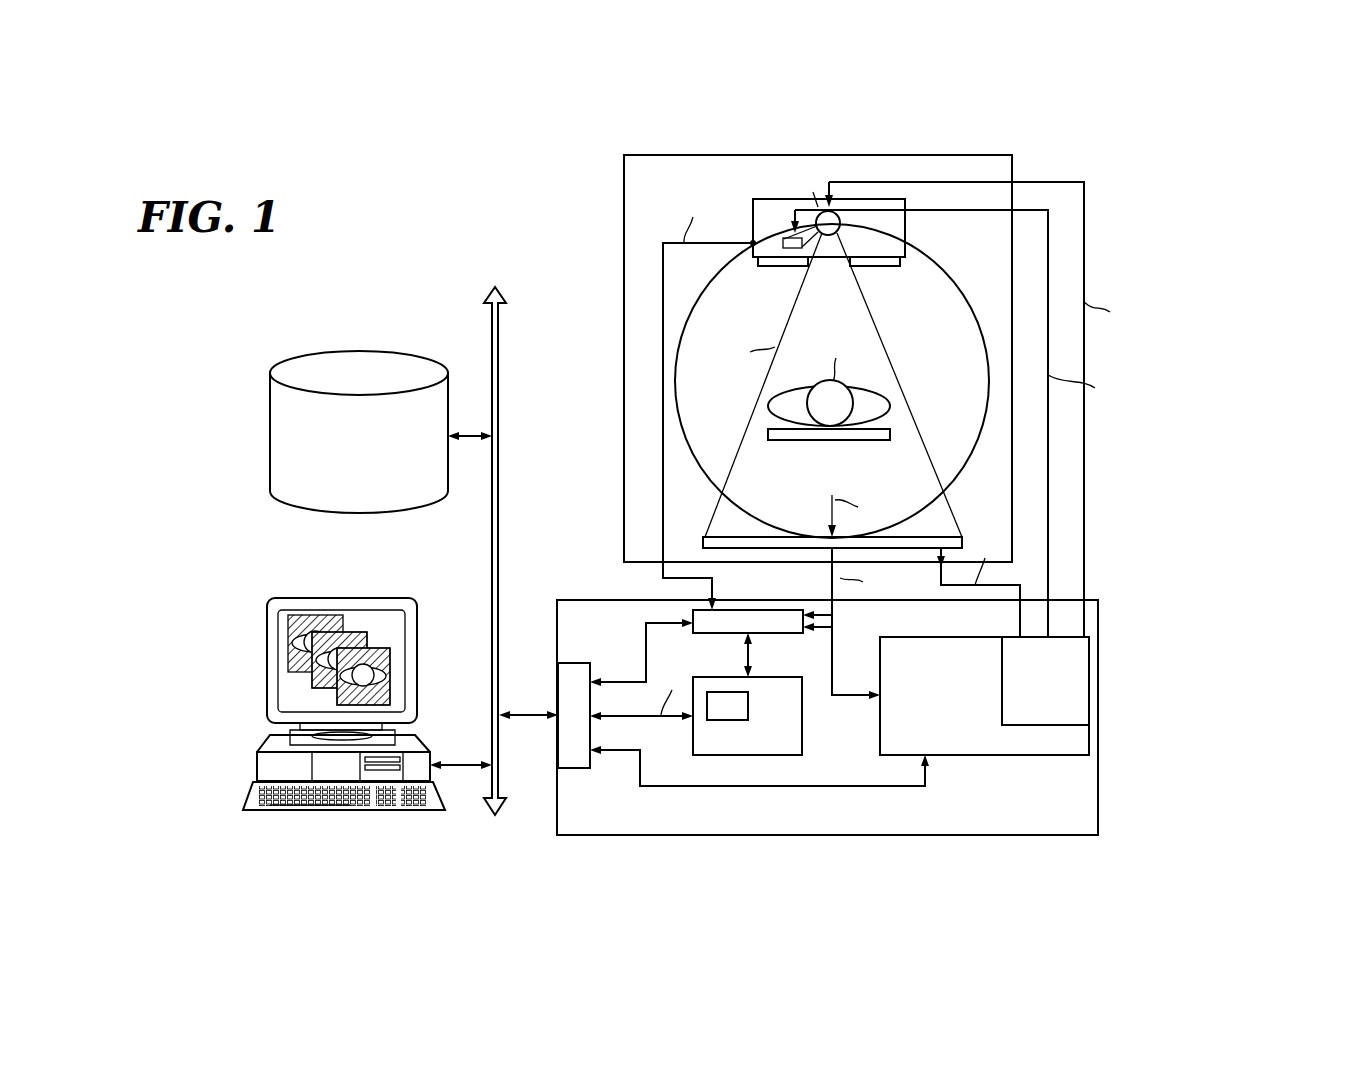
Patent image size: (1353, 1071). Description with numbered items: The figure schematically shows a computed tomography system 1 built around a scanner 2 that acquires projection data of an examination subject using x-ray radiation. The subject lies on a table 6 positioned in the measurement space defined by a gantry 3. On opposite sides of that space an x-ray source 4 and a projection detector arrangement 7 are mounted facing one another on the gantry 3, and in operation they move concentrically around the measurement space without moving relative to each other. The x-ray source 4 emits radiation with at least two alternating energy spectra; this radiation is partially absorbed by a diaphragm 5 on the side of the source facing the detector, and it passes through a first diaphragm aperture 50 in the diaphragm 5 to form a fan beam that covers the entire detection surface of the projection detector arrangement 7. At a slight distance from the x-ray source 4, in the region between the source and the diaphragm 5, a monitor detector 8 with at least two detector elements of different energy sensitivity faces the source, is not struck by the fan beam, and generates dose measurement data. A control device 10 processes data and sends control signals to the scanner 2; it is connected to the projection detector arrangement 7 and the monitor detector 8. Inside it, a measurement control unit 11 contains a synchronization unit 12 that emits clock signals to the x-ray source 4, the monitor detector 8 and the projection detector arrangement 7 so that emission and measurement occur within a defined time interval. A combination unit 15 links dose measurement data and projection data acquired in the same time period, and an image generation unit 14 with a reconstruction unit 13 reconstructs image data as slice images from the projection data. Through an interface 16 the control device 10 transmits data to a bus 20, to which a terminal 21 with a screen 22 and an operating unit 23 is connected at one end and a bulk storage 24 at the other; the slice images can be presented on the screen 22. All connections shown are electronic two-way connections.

The computed tomography system 1 is at (1080, 128).
The scanner 2 is at (652, 162).
The gantry 3 is at (953, 280).
The x-ray source 4 is at (846, 210).
The diaphragm 5 is at (887, 264).
The table 6 is at (810, 441).
The projection detector arrangement 7 is at (755, 537).
The monitor detector 8 is at (790, 258).
The control device 10 is at (1098, 735).
The measurement control unit 11 is at (985, 756).
The synchronization unit 12 is at (1008, 660).
The reconstruction unit 13 is at (675, 758).
The image generation unit 14 is at (818, 810).
The combination unit 15 is at (750, 611).
The interface 16 is at (568, 757).
The bus 20 is at (499, 372).
The terminal 21 is at (257, 763).
The screen 22 is at (378, 617).
The operating unit 23 is at (248, 790).
The bulk storage 24 is at (366, 352).
The first diaphragm aperture 50 is at (829, 263).